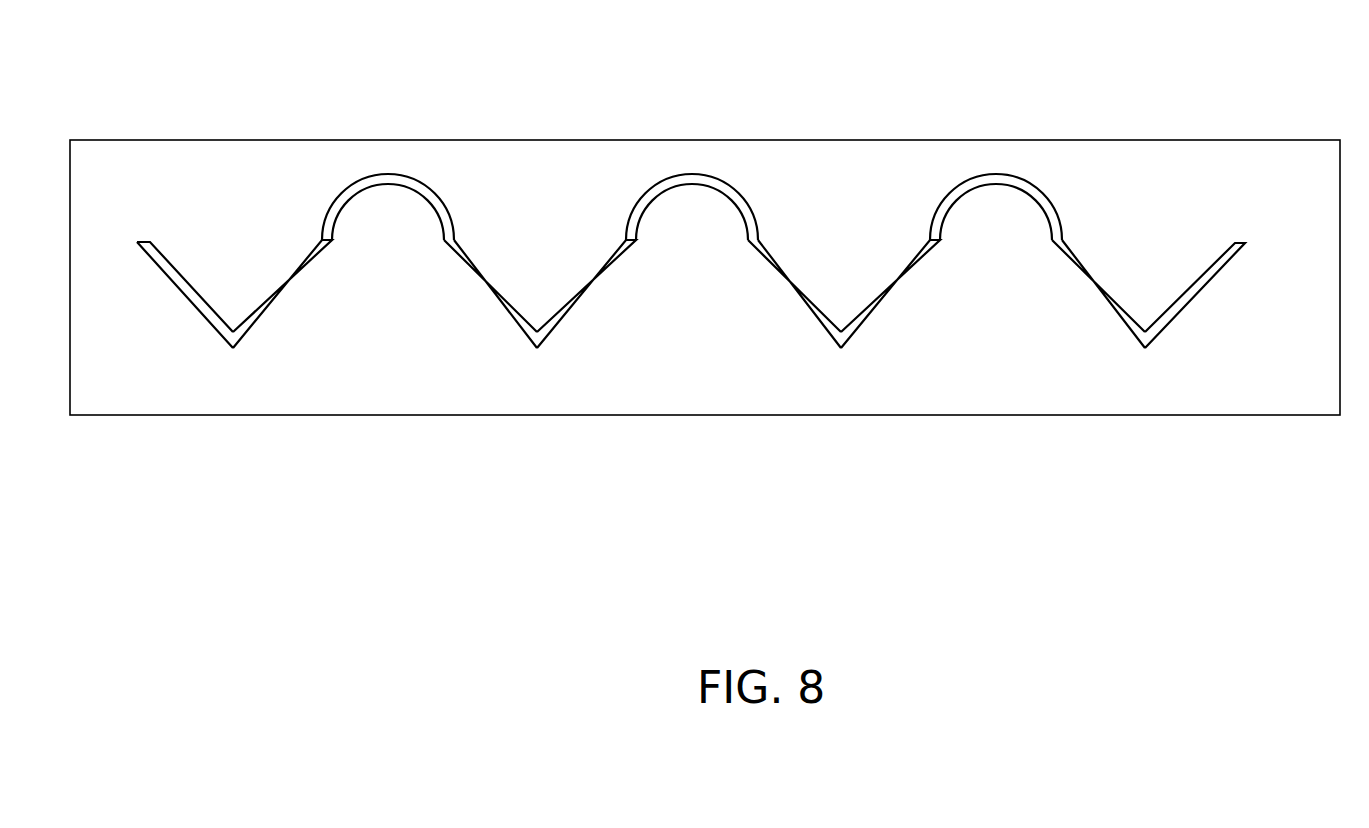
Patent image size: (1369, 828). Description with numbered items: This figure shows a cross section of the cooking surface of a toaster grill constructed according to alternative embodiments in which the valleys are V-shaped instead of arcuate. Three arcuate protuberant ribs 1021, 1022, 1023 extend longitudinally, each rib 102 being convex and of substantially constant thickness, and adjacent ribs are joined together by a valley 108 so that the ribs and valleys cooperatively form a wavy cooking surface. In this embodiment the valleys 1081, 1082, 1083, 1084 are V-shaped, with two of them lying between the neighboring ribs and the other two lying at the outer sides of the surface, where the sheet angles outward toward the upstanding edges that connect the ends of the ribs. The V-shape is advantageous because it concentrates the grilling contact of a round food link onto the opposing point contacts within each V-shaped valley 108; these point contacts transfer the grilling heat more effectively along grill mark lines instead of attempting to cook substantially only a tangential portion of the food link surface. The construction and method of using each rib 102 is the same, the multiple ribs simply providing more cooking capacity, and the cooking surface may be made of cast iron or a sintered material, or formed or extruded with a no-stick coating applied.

The rib 102 is at (692, 140).
The valley 108 is at (691, 378).
The first rib 1021 is at (389, 174).
The second rib 1022 is at (693, 174).
The third rib 1023 is at (997, 174).
The first V-shaped valley 1081 is at (233, 350).
The second V-shaped valley 1082 is at (537, 350).
The third V-shaped valley 1083 is at (841, 350).
The fourth V-shaped valley 1084 is at (1145, 350).